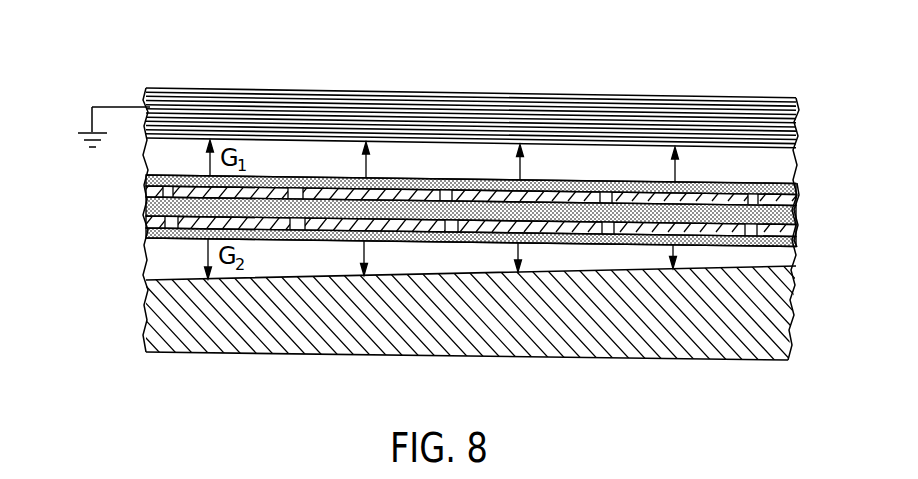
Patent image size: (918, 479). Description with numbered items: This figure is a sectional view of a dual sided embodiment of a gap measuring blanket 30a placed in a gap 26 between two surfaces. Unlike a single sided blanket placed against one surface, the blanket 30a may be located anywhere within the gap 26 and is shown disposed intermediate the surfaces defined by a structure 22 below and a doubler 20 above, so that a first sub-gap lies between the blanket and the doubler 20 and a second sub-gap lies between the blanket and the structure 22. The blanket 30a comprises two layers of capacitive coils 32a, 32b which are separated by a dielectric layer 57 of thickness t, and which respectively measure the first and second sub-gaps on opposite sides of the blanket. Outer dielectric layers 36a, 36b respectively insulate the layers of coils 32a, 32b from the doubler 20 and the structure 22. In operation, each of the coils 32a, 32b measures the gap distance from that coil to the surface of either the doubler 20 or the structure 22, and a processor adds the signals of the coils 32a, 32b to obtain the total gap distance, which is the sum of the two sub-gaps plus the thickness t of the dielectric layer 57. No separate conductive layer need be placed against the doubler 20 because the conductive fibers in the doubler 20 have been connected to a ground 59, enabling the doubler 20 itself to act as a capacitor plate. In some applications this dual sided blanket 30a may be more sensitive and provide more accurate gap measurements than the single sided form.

The doubler 20 is at (196, 106).
The structure 22 is at (238, 321).
The gap 26 is at (158, 262).
The gap measuring blanket 30a is at (815, 194).
The capacitive coils 32a is at (413, 195).
The capacitive coils 32b is at (689, 238).
The outer dielectric layer 36a is at (567, 187).
The outer dielectric layer 36b is at (343, 233).
The dielectric layer 57 is at (733, 217).
The ground 59 is at (79, 108).